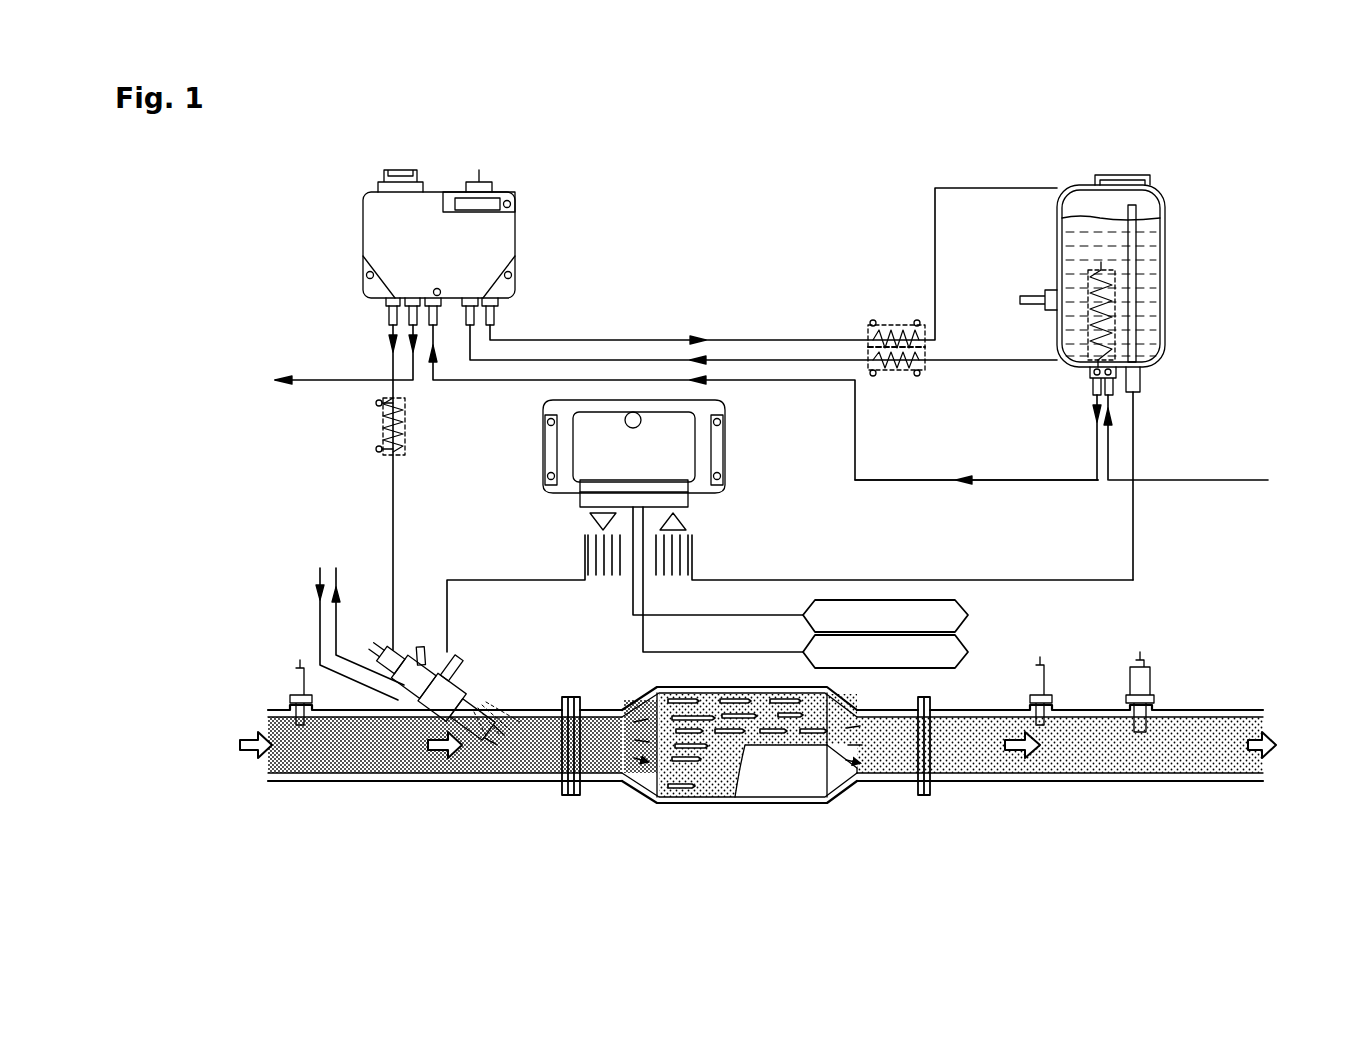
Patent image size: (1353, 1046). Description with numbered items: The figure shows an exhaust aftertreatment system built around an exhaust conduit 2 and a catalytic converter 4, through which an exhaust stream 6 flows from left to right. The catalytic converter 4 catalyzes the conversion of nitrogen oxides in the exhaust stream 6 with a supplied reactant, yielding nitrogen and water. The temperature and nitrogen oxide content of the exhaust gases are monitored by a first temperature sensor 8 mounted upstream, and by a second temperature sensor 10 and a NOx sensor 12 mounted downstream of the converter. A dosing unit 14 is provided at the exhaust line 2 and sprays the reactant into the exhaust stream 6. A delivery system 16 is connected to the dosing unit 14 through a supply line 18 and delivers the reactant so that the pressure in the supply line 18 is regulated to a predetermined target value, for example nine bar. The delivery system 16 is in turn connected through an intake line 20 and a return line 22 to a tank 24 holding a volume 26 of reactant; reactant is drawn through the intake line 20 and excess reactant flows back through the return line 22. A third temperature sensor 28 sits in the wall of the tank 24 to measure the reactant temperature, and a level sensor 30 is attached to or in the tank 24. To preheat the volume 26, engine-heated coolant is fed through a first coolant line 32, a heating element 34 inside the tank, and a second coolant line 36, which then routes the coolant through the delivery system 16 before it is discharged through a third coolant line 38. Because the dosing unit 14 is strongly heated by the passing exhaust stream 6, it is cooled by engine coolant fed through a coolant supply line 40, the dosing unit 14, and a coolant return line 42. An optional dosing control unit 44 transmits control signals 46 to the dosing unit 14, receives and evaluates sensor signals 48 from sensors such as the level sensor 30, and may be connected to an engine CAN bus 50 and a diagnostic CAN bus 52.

The exhaust conduit 2 is at (345, 783).
The catalytic converter 4 is at (735, 740).
The exhaust stream 6 is at (445, 760).
The first temperature sensor 8 is at (290, 690).
The second temperature sensor 10 is at (1046, 682).
The NOx sensor 12 is at (1150, 682).
The dosing unit 14 is at (470, 660).
The delivery system 16 is at (490, 232).
The supply line 18 is at (396, 487).
The intake line 20 is at (1010, 362).
The return line 22 is at (935, 240).
The tank 24 is at (1160, 200).
The volume of reactant 26 is at (1150, 270).
The third temperature sensor 28 is at (1020, 300).
The level sensor 30 is at (1136, 318).
The first coolant line 32 is at (1215, 482).
The heating element 34 is at (1101, 262).
The second coolant line 36 is at (1010, 482).
The third coolant line 38 is at (340, 380).
The coolant supply line 40 is at (315, 640).
The coolant return line 42 is at (340, 635).
The dosing control unit 44 is at (712, 445).
The control signals 46 is at (512, 582).
The sensor signals 48 is at (805, 582).
The engine CAN bus 50 is at (955, 612).
The diagnostic CAN bus 52 is at (955, 648).